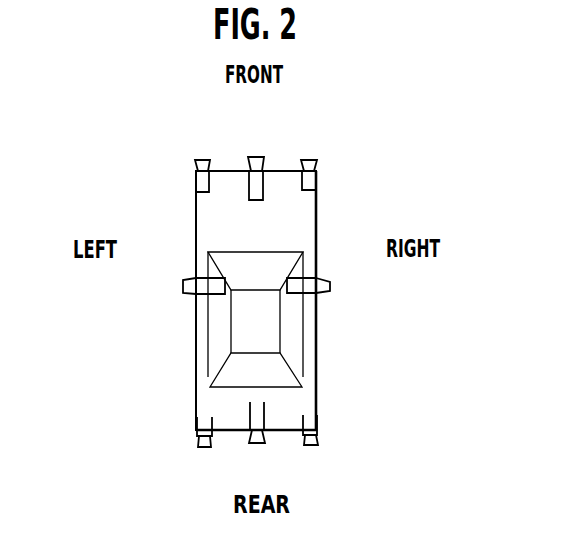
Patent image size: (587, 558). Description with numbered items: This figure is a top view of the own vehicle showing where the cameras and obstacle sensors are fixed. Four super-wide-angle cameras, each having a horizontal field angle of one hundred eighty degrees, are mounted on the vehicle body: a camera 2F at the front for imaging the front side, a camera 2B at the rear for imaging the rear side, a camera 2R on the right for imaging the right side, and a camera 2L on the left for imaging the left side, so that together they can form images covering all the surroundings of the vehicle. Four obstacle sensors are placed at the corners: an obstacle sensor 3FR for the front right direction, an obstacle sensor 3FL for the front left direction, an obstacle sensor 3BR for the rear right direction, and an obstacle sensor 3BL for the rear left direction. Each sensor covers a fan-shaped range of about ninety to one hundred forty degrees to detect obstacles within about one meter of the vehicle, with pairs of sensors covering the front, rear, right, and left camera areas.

The camera 2F is at (263, 185).
The camera 2B is at (257, 417).
The camera 2L is at (184, 285).
The camera 2R is at (312, 283).
The obstacle sensor 3FL is at (198, 180).
The obstacle sensor 3FR is at (315, 175).
The obstacle sensor 3BL is at (197, 429).
The obstacle sensor 3BR is at (316, 427).